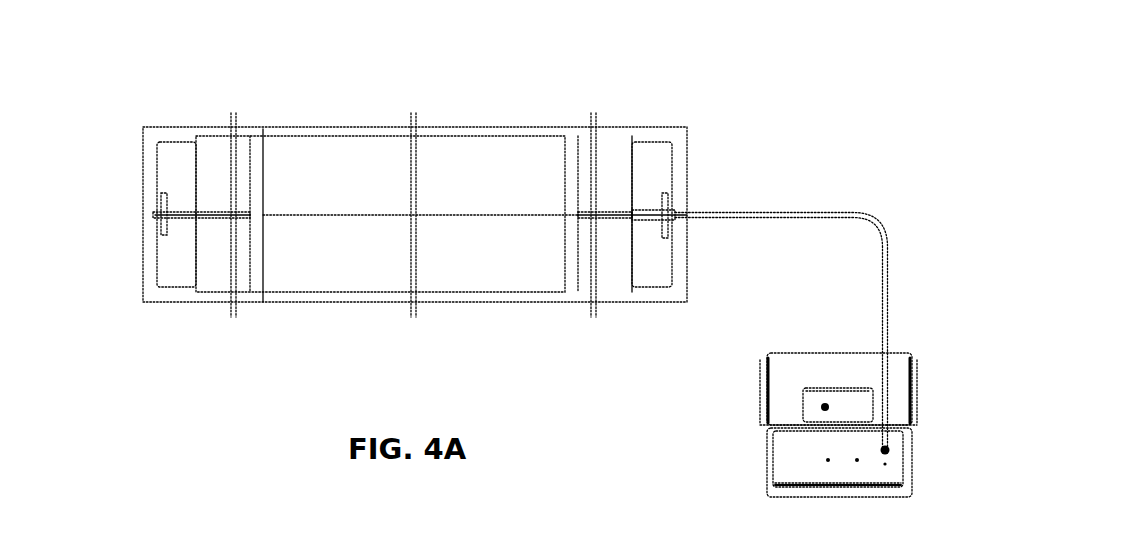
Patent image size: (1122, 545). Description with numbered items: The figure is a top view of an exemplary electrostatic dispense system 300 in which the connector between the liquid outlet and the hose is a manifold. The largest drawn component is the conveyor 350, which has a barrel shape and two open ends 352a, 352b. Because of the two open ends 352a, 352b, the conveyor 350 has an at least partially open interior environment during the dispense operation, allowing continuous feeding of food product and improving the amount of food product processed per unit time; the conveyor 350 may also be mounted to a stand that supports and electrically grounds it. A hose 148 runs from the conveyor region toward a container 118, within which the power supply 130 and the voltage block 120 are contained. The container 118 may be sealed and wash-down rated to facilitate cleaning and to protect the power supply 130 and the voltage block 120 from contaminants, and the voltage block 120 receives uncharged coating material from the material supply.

The electrostatic dispense system 300 is at (114, 129).
The conveyor 350 is at (365, 277).
The open end 352a is at (196, 241).
The open end 352b is at (632, 168).
The hose 148 is at (833, 213).
The power supply 130 is at (783, 393).
The container 118 is at (915, 405).
The voltage block 120 is at (782, 475).